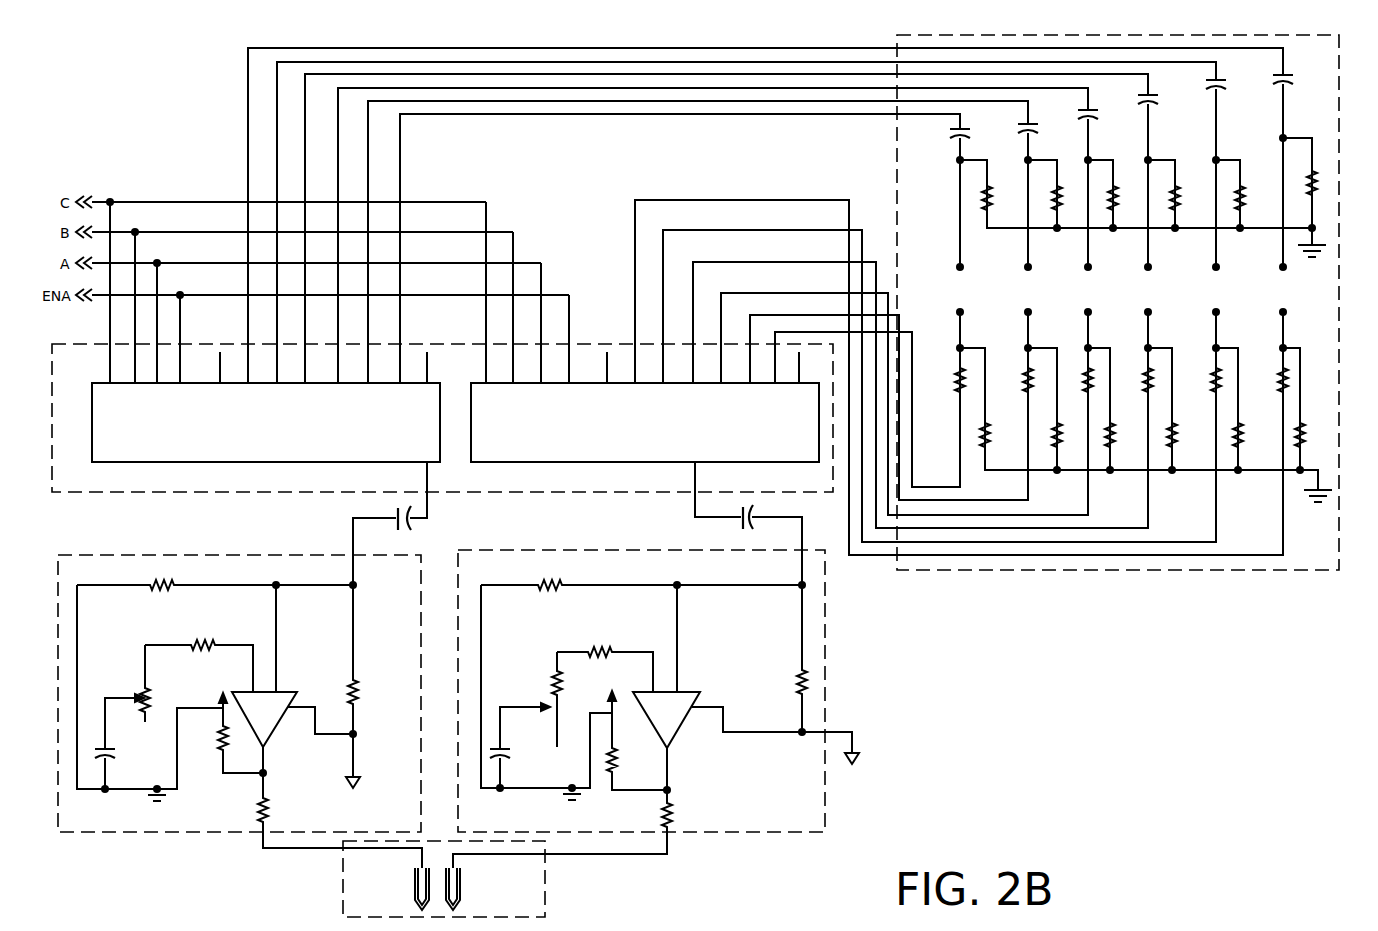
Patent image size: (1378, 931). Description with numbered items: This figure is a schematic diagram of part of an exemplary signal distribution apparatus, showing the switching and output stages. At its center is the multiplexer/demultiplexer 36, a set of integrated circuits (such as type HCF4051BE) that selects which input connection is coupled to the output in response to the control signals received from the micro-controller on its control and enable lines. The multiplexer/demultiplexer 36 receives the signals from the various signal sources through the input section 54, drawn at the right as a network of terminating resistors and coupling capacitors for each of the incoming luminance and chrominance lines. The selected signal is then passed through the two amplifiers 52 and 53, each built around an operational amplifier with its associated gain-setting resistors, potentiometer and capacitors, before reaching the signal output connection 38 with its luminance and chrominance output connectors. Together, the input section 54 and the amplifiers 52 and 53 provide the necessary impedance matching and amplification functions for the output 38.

The multiplexer/demultiplexer 36 is at (625, 492).
The signal output connection 38 is at (545, 890).
The amplifier 52 is at (825, 620).
The amplifier 53 is at (180, 832).
The input section 54 is at (1100, 570).